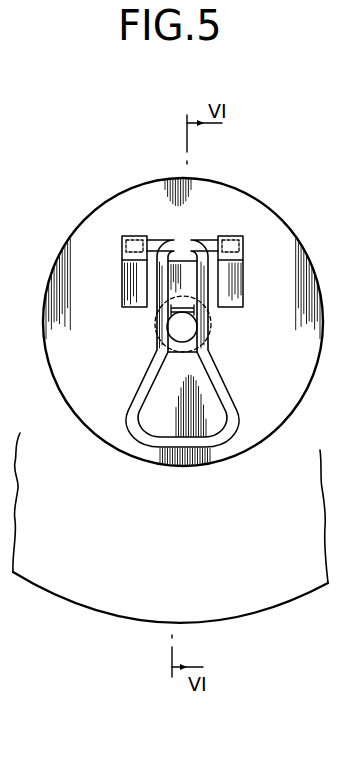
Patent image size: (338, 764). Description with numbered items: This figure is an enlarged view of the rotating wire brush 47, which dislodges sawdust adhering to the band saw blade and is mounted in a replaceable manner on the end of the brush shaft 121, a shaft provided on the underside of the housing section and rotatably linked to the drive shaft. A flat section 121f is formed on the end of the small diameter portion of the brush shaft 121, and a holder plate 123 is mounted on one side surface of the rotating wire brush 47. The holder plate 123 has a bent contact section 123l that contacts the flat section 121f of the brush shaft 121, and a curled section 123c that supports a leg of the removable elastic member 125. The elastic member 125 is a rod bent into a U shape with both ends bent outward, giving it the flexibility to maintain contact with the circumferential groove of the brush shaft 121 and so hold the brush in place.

The rotating wire brush 47 is at (300, 584).
The brush shaft 121 is at (198, 353).
The flat section 121f is at (177, 320).
The holder plate 123 is at (243, 284).
The curled section 123c is at (234, 237).
The bent contact section 123l is at (213, 303).
The elastic member 125 is at (227, 399).